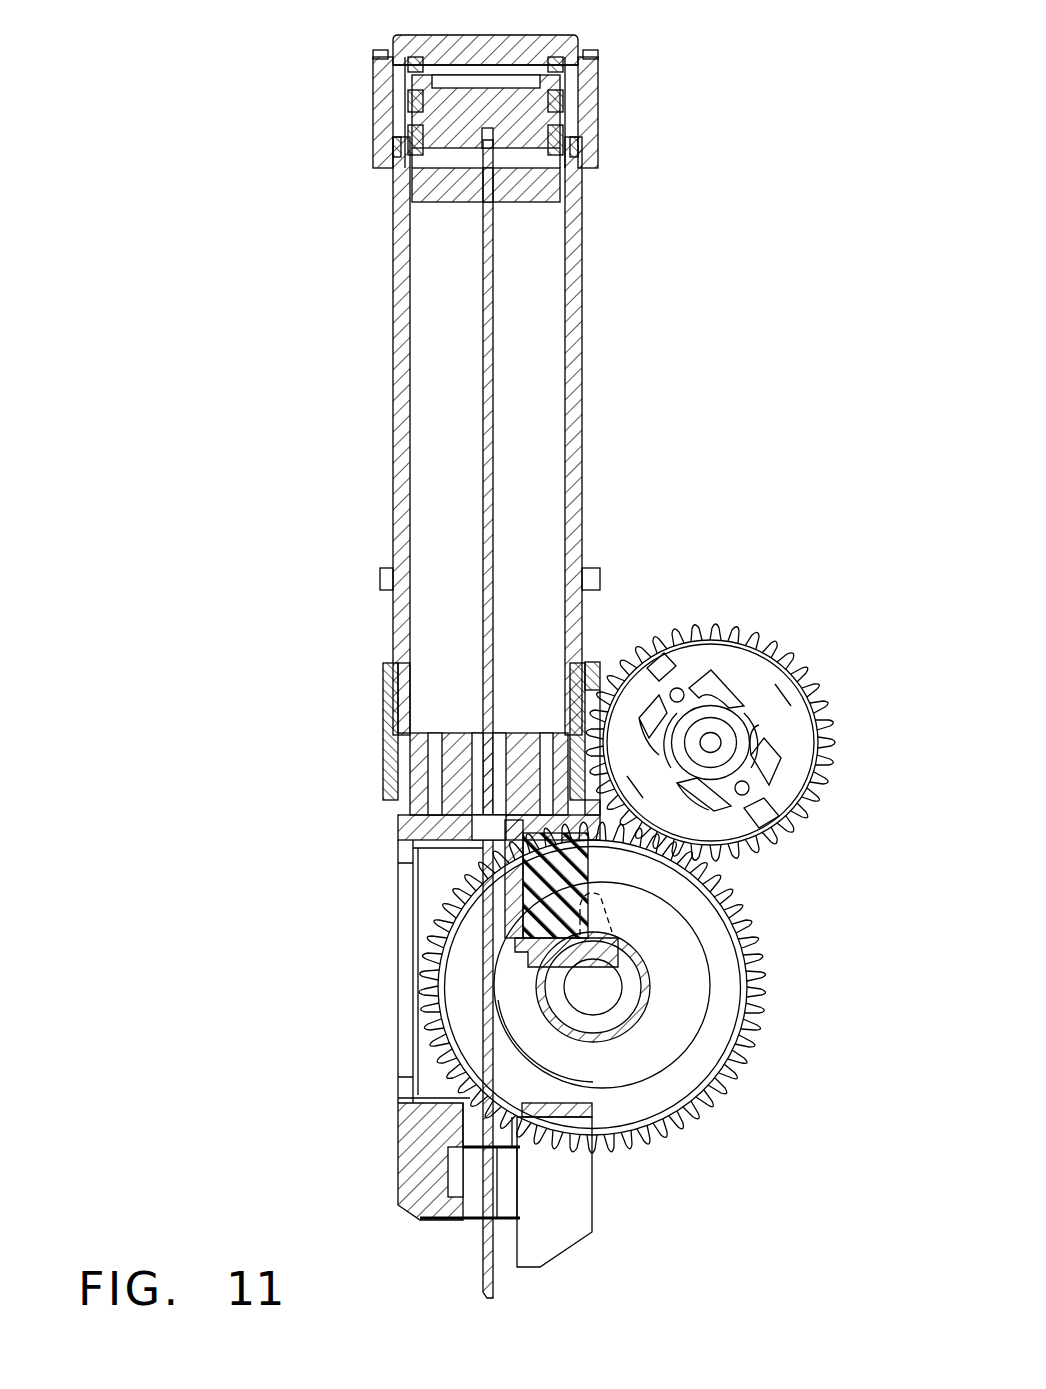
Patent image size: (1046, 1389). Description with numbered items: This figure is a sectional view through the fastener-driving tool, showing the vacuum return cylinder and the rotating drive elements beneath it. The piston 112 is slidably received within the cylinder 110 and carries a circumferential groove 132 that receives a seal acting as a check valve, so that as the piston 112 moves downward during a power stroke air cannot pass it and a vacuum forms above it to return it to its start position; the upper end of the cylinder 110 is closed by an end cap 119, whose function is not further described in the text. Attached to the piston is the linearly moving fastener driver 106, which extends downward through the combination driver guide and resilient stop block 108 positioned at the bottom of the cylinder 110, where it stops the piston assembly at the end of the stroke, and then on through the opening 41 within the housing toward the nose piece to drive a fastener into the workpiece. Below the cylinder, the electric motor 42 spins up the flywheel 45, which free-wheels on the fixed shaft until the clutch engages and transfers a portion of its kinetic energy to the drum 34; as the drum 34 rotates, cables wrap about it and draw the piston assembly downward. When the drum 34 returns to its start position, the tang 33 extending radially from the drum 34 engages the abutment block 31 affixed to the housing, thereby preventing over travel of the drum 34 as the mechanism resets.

The piston 112 is at (480, 92).
The circumferential groove 132 is at (573, 62).
The end cap 119 is at (598, 127).
The cylinder 110 is at (582, 270).
The fastener driver 106 is at (495, 530).
The guide block 108 is at (468, 730).
The electric motor 42 is at (752, 662).
The flywheel 45 is at (770, 938).
The abutment block 31 is at (622, 930).
The tang 33 is at (508, 1025).
The drum 34 is at (660, 1063).
The opening 41 is at (462, 1122).